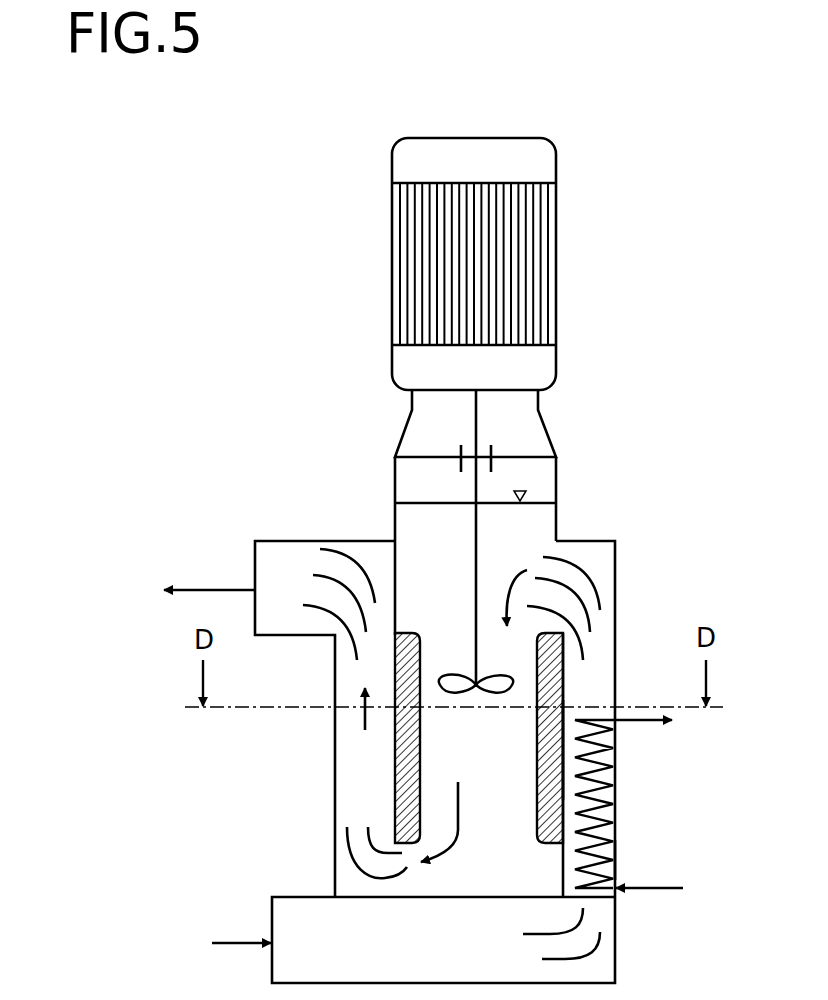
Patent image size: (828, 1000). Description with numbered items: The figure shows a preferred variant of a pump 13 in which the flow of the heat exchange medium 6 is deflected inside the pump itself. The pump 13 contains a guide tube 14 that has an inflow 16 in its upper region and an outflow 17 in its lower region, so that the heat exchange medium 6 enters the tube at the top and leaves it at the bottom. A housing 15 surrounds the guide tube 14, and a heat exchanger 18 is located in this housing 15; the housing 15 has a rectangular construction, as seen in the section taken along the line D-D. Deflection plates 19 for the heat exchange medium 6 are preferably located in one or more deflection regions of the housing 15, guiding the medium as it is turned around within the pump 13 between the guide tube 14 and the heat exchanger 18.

The pump 13 is at (583, 430).
The deflection plates 19 is at (350, 541).
The inflow 16 is at (565, 598).
The heat exchange medium 6 is at (365, 717).
The guide tube 14 is at (565, 747).
The heat exchanger 18 is at (612, 793).
The housing 15 is at (615, 860).
The outflow 17 is at (405, 880).